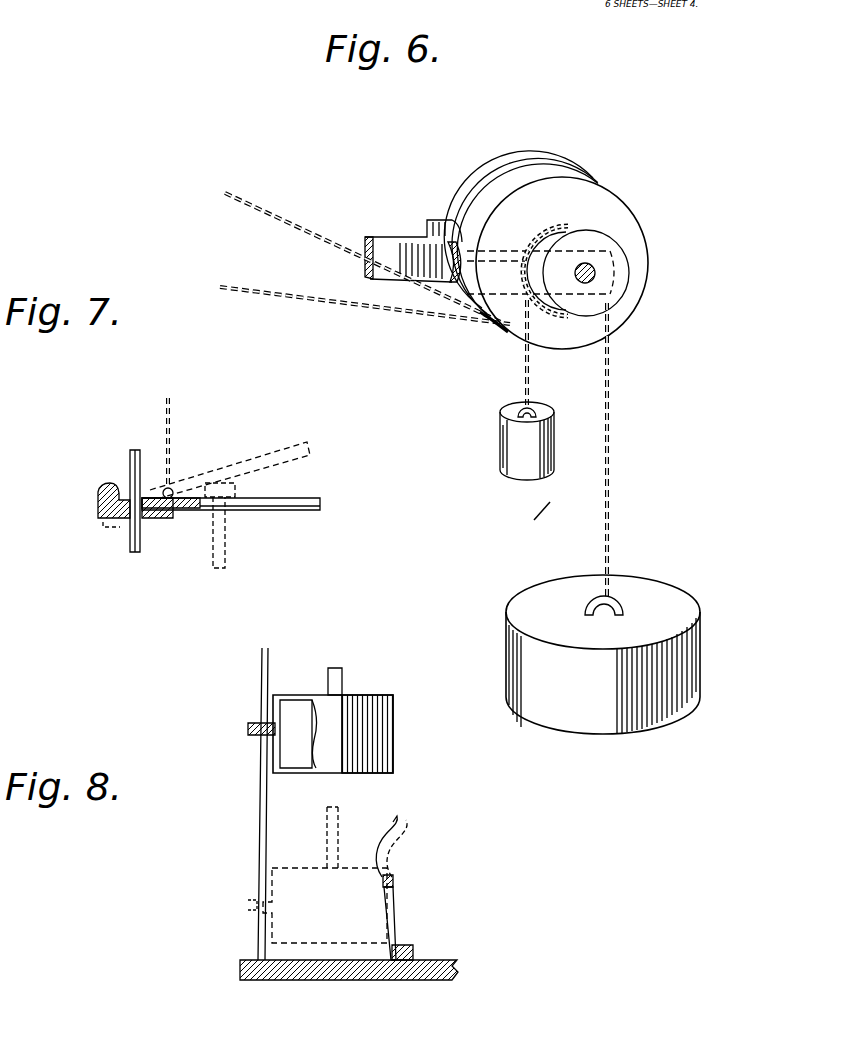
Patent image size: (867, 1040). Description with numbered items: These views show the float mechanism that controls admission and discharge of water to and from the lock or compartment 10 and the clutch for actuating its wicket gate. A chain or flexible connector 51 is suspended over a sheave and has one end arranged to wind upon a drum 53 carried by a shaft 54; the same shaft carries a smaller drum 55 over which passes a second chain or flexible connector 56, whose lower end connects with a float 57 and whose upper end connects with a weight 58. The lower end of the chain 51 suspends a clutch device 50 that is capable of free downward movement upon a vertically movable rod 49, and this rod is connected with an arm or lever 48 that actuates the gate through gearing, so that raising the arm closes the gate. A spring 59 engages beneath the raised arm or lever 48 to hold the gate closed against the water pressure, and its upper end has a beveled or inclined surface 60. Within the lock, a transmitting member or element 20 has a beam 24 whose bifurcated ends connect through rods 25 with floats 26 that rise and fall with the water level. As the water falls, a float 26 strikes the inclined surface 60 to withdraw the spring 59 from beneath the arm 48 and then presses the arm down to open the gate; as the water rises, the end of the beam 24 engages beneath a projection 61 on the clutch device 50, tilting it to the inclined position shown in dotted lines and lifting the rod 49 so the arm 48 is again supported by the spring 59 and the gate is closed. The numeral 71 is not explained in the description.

In FIG. 8, the lock or compartment 10 is at (345, 804).
In FIG. 8, the transmitting member or element 20 is at (336, 691).
In FIG. 7, the beam 24 is at (231, 491).
In FIG. 7, the rod 25 is at (228, 547).
In FIG. 8, the rod 25 is at (330, 665).
In FIG. 8, the float 26 is at (393, 723).
In FIG. 8, the arm or lever 48 is at (383, 950).
In FIG. 7, the vertically movable rod 49 is at (140, 540).
In FIG. 7, the clutch device 50 is at (103, 515).
In FIG. 6, the chain or flexible connector 51 is at (320, 300).
In FIG. 7, the chain or flexible connector 51 is at (172, 420).
In FIG. 6, the drum 53 is at (617, 197).
In FIG. 6, the shaft 54 is at (597, 272).
In FIG. 6, the smaller drum 55 is at (607, 242).
In FIG. 6, the chain or flexible connector 56 is at (613, 422).
In FIG. 6, the float 57 is at (603, 654).
In FIG. 6, the weight 58 is at (510, 452).
In FIG. 8, the spring 59 is at (393, 913).
In FIG. 8, the beveled or inclined surface 60 is at (400, 820).
In FIG. 7, the projection 61 is at (278, 448).
In FIG. 6, the cord 71 is at (280, 213).